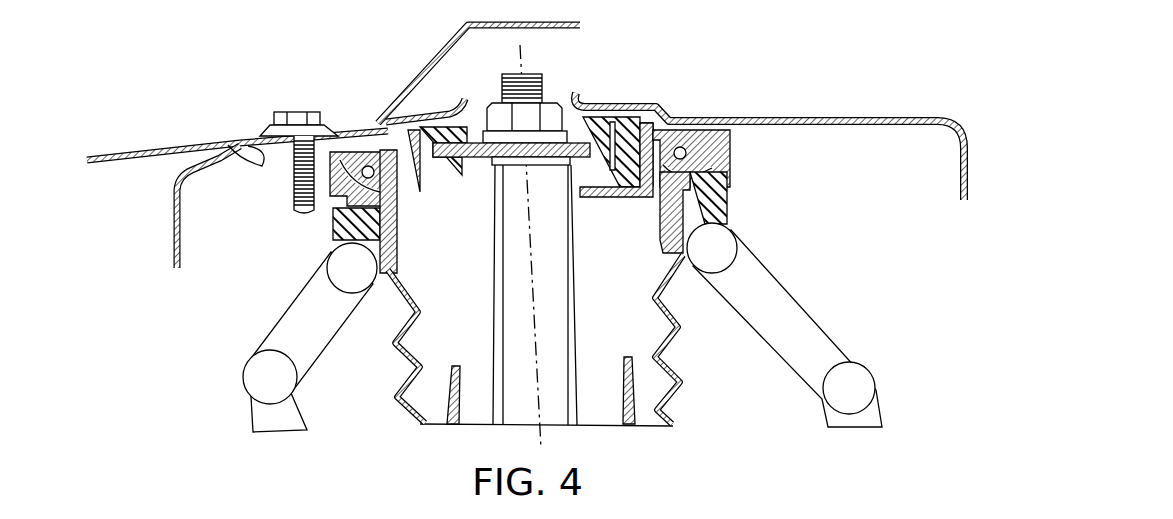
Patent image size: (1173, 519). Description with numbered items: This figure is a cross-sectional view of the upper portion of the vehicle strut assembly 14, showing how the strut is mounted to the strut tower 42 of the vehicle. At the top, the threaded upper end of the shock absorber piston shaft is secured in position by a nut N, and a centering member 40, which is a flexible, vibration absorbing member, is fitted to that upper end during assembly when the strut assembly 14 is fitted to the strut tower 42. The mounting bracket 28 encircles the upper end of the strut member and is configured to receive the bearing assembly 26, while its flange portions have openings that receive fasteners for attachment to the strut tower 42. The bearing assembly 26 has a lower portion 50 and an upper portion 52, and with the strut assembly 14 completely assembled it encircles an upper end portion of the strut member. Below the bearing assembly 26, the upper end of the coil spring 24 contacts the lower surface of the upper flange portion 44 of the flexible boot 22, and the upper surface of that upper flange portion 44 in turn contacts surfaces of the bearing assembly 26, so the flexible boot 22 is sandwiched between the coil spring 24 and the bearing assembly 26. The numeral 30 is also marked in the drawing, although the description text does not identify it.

The strut assembly 14 is at (597, 96).
The strut tower 42 is at (174, 216).
The mounting bracket 28 is at (271, 166).
The isolator assembly 30 is at (357, 147).
The nut N is at (487, 122).
The centering member 40 is at (623, 133).
The upper portion 52 is at (677, 146).
The upper flange portion 44 is at (728, 211).
The lower portion 50 is at (664, 228).
The bearing assembly 26 is at (404, 238).
The flexible boot 22 is at (667, 364).
The coil spring 24 is at (813, 310).